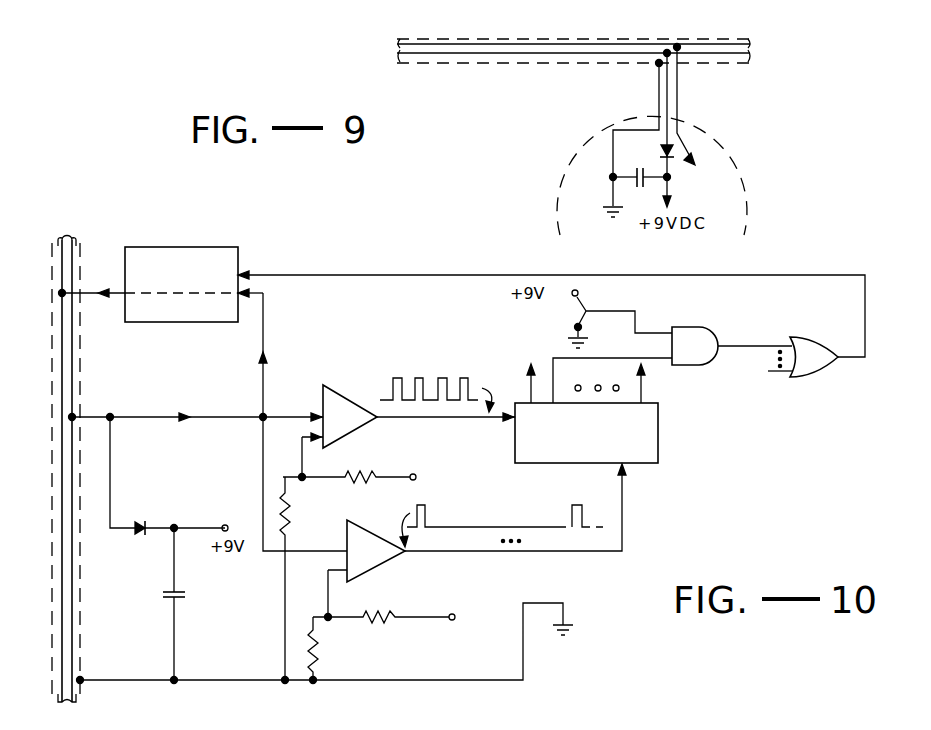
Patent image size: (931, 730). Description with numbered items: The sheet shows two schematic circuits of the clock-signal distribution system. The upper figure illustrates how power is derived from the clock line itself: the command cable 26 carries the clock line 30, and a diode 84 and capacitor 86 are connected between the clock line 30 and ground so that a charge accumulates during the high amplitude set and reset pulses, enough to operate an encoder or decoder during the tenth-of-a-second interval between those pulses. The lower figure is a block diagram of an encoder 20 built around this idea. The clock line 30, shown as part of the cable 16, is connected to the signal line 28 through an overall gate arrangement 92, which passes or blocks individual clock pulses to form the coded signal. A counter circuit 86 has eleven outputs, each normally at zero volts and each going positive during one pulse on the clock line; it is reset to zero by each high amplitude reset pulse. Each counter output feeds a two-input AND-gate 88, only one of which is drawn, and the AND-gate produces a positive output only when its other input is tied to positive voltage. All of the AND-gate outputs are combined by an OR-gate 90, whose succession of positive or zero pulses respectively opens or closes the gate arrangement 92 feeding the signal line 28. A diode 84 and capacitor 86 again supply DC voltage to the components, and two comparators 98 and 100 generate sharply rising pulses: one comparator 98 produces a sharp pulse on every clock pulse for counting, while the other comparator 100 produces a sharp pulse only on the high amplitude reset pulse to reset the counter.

In FIG. 9, the command cable 26 is at (641, 34).
In FIG. 9, the diode 84 is at (670, 150).
In FIG. 10, the diode 84 is at (143, 525).
In FIG. 9, the capacitor 86 is at (645, 170).
In FIG. 10, the capacitor 86 is at (180, 601).
In FIG. 10, the gate arrangement 92 is at (195, 258).
In FIG. 10, the signal line 28 is at (62, 333).
In FIG. 10, the cable 16 is at (44, 379).
In FIG. 10, the clock line 30 is at (72, 587).
In FIG. 10, the control circuit 20 is at (830, 259).
In FIG. 10, the AND-gate 88 is at (700, 358).
In FIG. 10, the OR-gate 90 is at (805, 346).
In FIG. 10, the comparator 98 is at (336, 397).
In FIG. 10, the comparator 100 is at (352, 527).